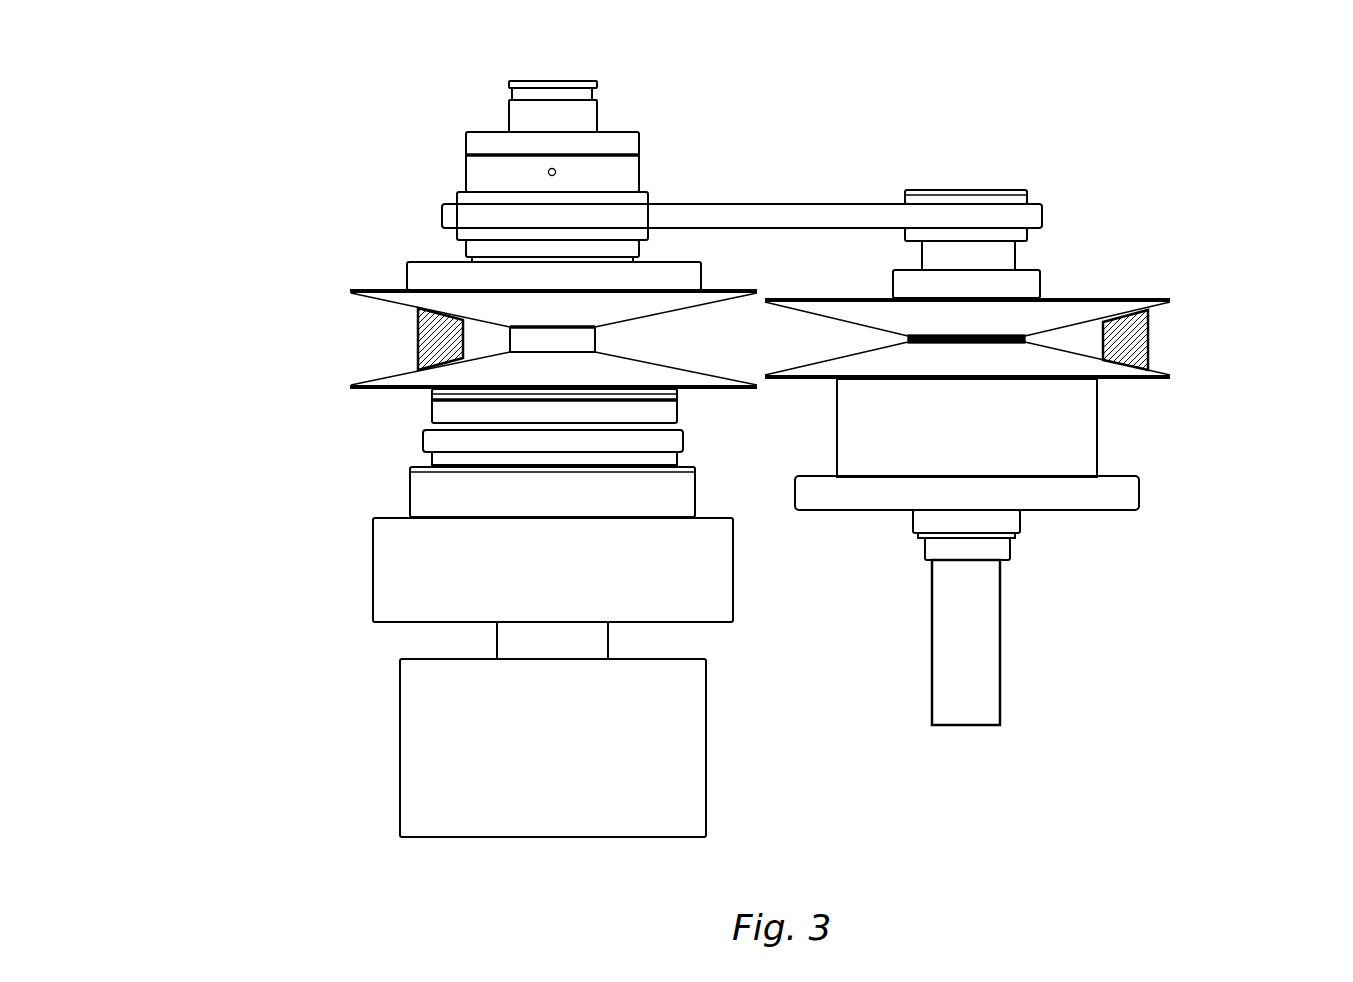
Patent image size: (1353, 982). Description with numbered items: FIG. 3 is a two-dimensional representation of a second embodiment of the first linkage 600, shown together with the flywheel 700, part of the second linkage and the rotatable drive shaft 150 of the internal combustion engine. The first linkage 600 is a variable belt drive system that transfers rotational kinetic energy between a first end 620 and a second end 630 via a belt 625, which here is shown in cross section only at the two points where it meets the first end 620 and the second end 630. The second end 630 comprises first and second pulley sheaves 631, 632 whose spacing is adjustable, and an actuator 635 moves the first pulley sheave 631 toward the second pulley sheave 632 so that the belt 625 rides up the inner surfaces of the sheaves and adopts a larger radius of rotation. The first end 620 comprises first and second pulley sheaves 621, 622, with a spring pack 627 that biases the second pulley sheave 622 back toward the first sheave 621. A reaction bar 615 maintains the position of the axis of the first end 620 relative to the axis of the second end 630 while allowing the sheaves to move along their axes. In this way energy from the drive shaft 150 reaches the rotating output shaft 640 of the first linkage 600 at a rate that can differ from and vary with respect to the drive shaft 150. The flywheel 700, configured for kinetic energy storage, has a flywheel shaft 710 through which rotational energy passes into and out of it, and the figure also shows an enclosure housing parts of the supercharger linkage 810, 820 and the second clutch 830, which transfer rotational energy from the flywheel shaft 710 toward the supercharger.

The first linkage 600 is at (238, 68).
The actuator 635 is at (548, 79).
The reaction bar 615 is at (757, 203).
The second end 630 is at (477, 278).
The first pulley sheave 631 is at (418, 306).
The second pulley sheave 632 is at (413, 373).
The belt 625 is at (418, 341).
The rotating output shaft 640 is at (432, 415).
The supercharger linkage 810 is at (373, 558).
The supercharger linkage 820 is at (461, 570).
The second clutch 830 is at (461, 570).
The flywheel shaft 710 is at (497, 637).
The flywheel 700 is at (400, 743).
The first end 620 is at (1039, 312).
The first pulley sheave 621 is at (1057, 310).
The second pulley sheave 622 is at (1103, 370).
The spring pack 627 is at (1097, 452).
The drive shaft 150 is at (1000, 638).